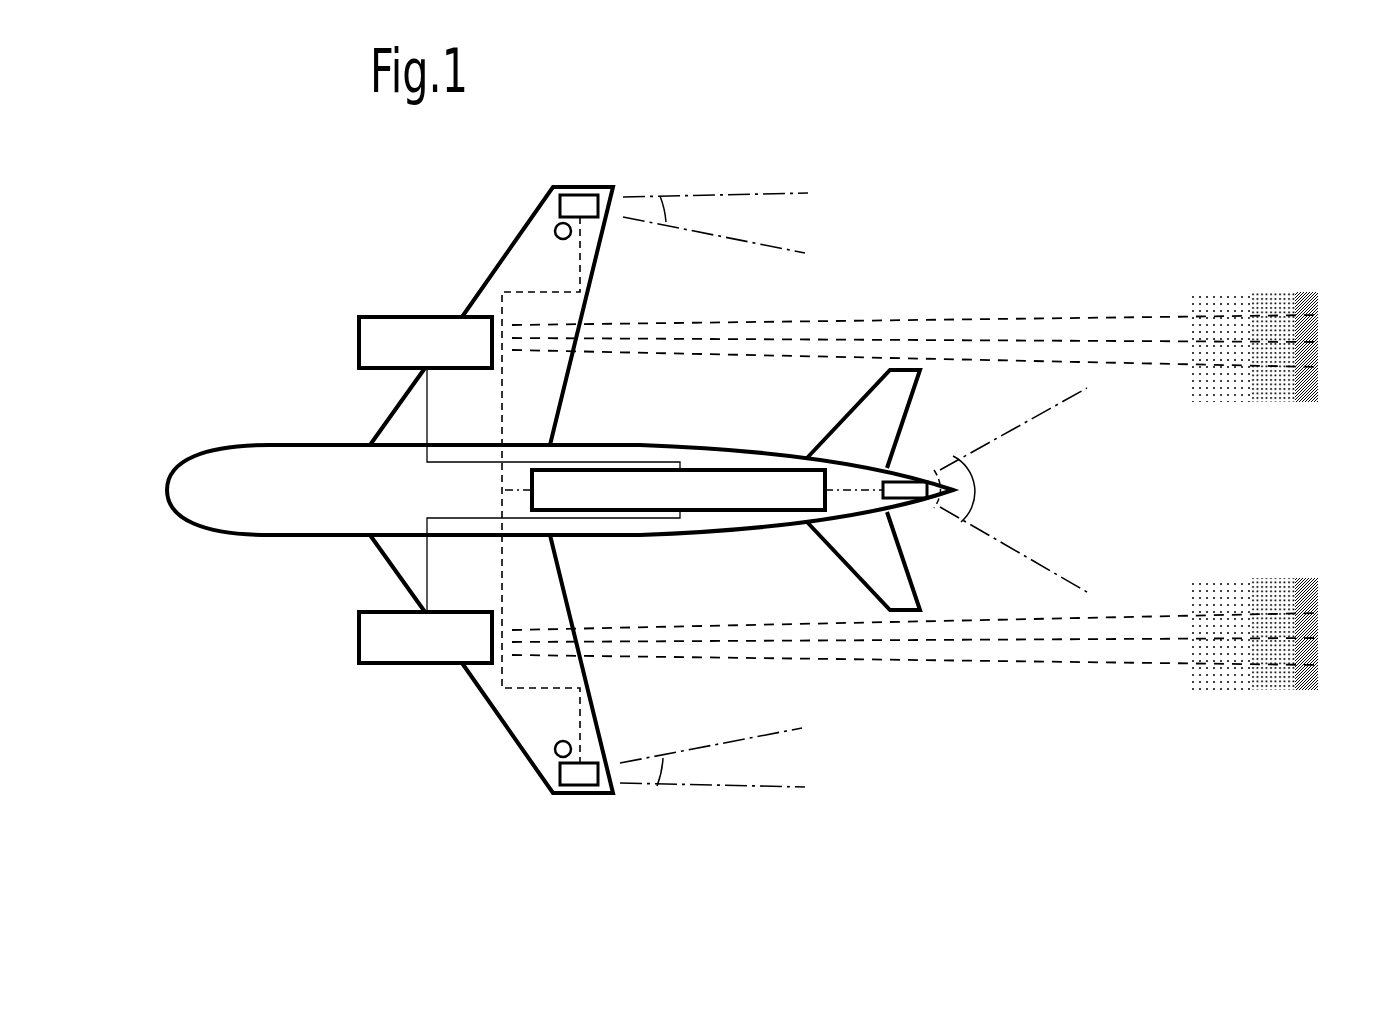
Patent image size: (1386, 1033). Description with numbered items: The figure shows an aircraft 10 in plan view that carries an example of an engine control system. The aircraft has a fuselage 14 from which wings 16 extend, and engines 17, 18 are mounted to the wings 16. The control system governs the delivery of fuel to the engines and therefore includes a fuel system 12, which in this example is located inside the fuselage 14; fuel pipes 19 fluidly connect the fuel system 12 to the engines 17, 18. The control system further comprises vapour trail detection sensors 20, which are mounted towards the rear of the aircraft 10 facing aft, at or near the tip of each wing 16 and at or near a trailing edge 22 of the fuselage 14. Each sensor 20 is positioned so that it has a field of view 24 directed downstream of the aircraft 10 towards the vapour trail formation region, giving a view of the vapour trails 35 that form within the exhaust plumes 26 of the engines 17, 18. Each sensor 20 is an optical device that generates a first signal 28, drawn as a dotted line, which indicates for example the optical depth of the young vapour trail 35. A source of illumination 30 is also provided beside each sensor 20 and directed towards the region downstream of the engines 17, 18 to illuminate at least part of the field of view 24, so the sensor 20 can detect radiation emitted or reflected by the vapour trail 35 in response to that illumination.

The aircraft 10 is at (355, 212).
The fuel system 12 is at (723, 498).
The fuselage 14 is at (307, 536).
The wings 16 is at (484, 699).
The engine 17 is at (358, 638).
The engine 18 is at (359, 331).
The fuel pipes 19 is at (426, 412).
The vapour trail detection sensor 20 is at (583, 203).
The trailing edge of the fuselage 22 is at (918, 470).
The field of view 24 is at (760, 222).
The exhaust plumes 26 is at (647, 325).
The first signal 28 is at (560, 291).
The source of illumination 30 is at (557, 226).
The vapour trail 35 is at (1235, 396).